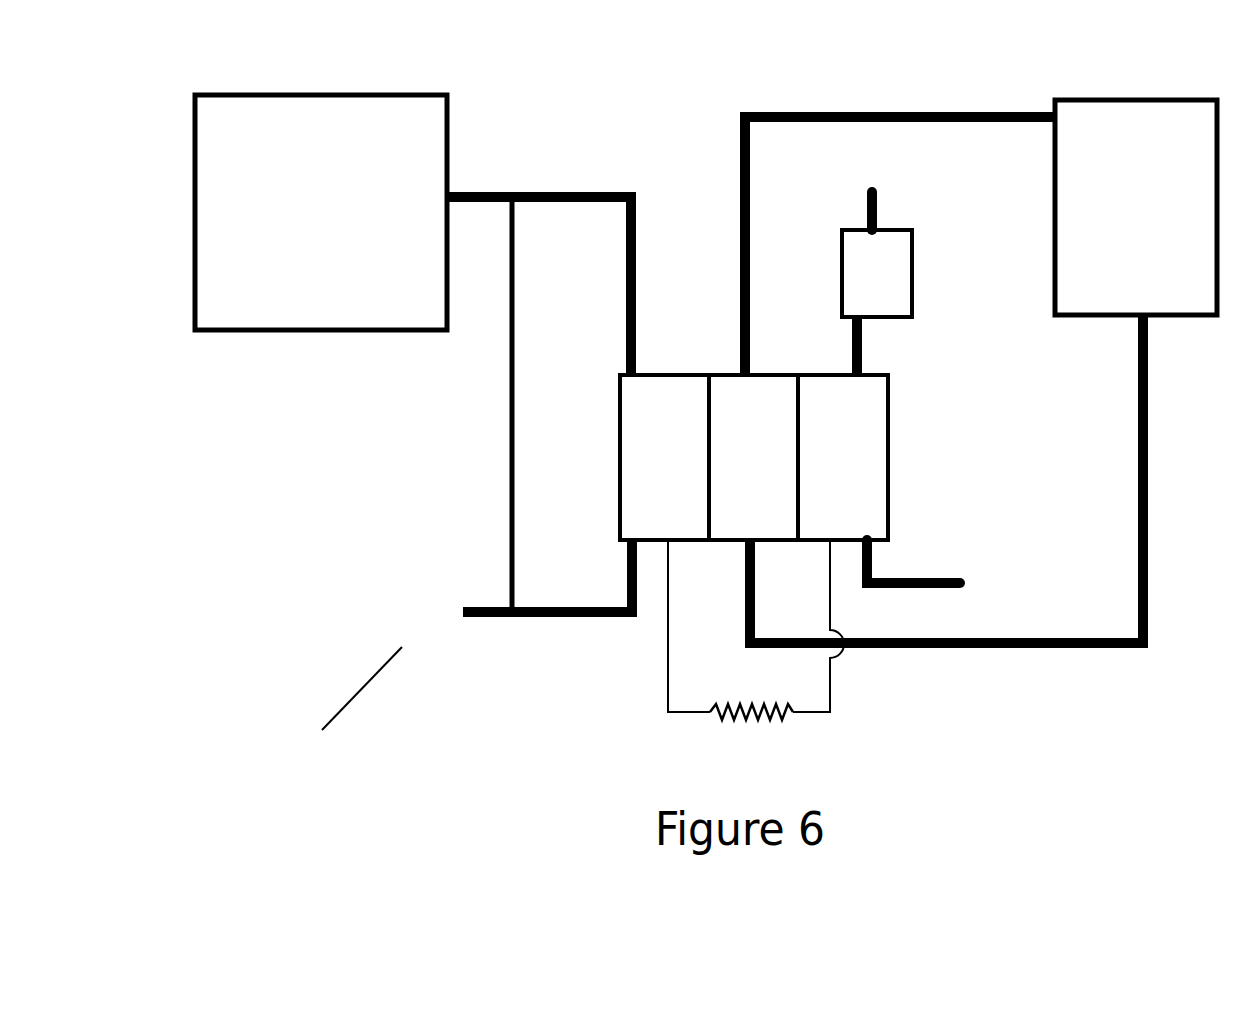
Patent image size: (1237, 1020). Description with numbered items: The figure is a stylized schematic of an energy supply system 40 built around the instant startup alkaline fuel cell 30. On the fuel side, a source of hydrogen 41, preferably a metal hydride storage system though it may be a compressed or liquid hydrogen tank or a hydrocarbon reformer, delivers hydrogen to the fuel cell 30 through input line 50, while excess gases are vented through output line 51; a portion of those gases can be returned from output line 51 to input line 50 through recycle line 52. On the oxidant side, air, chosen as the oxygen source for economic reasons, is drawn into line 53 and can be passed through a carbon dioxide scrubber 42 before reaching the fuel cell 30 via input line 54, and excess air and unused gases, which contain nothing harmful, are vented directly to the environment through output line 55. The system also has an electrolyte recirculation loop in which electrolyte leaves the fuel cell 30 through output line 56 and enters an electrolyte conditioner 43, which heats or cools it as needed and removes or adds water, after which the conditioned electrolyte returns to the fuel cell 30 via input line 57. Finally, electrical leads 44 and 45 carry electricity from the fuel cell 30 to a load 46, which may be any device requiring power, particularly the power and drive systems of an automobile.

The alkaline fuel cell 30 is at (754, 457).
The energy supply system 40 is at (331, 718).
The source of hydrogen 41 is at (321, 212).
The carbon dioxide scrubber 42 is at (877, 273).
The electrolyte conditioner 43 is at (1136, 207).
The electrical lead 44 is at (665, 687).
The electrical lead 45 is at (835, 707).
The load 46 is at (751, 696).
The input line 50 is at (578, 190).
The output line 51 is at (567, 605).
The recycle line 52 is at (516, 289).
The line 53 is at (880, 206).
The input line 54 is at (865, 347).
The output line 55 is at (945, 568).
The output line 56 is at (1065, 630).
The input line 57 is at (890, 110).